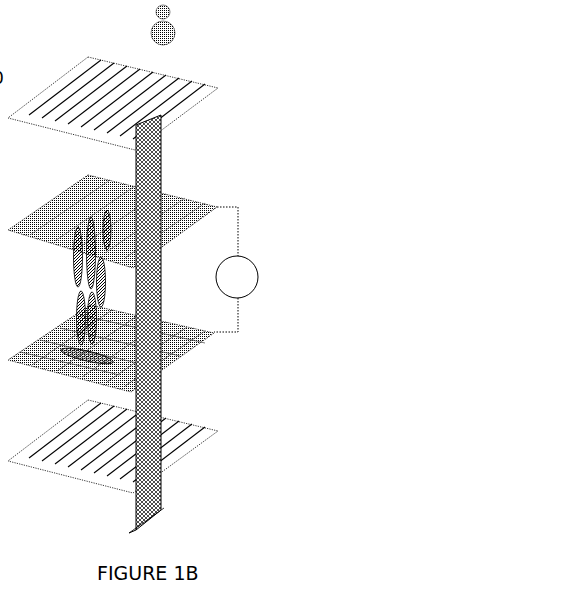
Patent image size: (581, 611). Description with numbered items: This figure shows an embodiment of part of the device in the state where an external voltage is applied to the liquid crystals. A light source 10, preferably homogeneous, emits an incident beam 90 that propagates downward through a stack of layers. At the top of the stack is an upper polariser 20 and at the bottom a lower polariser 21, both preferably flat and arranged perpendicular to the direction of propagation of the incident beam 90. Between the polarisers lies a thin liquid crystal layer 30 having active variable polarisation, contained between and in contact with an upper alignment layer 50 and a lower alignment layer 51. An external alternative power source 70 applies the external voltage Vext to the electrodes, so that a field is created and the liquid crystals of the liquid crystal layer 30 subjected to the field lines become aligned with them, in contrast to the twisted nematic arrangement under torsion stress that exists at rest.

The light source 10 is at (170, 25).
The upper polariser 20 is at (222, 92).
The lower polariser 21 is at (227, 430).
The liquid crystal layer 30 is at (92, 278).
The upper alignment layer 50 is at (212, 203).
The lower alignment layer 51 is at (212, 343).
The external alternative power source 70 is at (258, 270).
The incident beam 90 is at (173, 163).